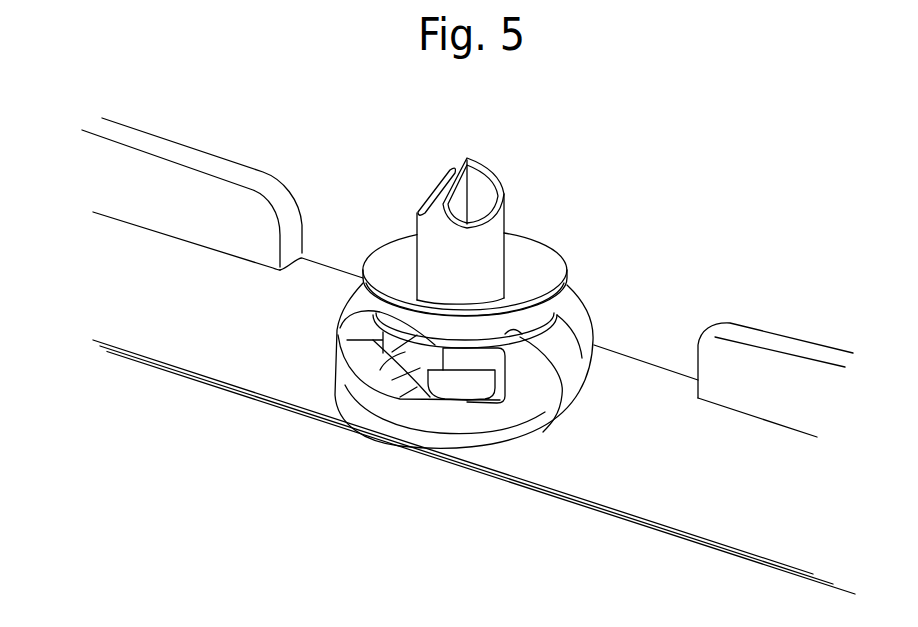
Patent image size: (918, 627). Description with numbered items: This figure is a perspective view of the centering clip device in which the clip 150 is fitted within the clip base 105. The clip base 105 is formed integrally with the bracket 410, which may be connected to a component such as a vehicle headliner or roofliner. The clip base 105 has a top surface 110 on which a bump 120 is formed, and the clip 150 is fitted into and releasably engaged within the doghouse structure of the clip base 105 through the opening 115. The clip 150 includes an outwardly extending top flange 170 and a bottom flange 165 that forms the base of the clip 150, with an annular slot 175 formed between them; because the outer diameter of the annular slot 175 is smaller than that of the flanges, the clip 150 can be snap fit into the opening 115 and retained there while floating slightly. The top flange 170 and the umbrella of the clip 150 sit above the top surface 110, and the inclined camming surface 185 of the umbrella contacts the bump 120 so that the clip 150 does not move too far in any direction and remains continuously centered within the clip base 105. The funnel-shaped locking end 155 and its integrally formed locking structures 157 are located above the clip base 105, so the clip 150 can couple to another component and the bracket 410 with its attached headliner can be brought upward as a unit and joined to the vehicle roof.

The clip base 105 is at (347, 340).
The top surface 110 is at (547, 337).
The opening 115 is at (380, 370).
The bump 120 is at (563, 397).
The clip 150 is at (358, 210).
The locking end 155 is at (504, 198).
The locking structures 157 is at (423, 187).
The bottom flange 165 is at (543, 432).
The top flange 170 is at (568, 267).
The annular slot 175 is at (384, 334).
The inclined camming surface 185 is at (548, 340).
The bracket 410 is at (238, 357).